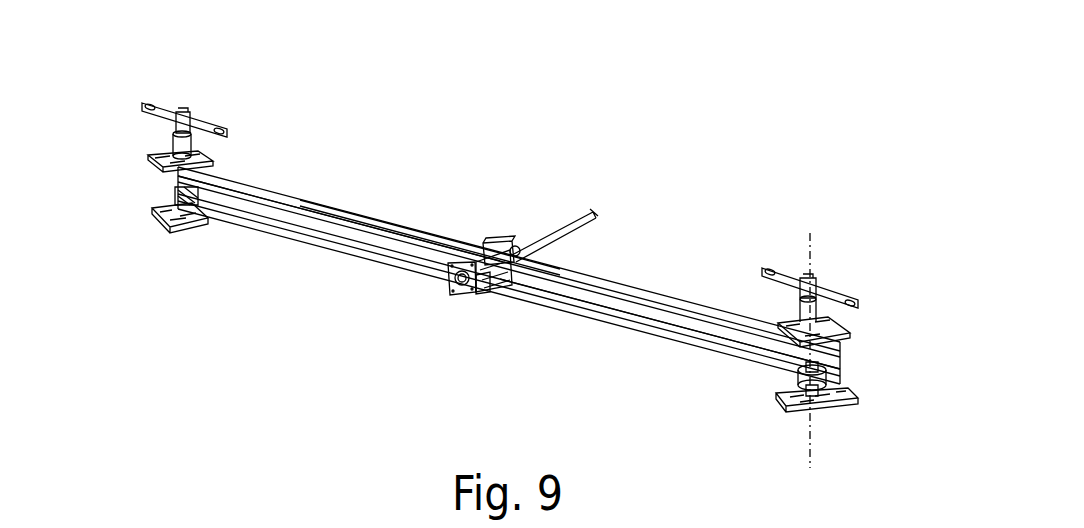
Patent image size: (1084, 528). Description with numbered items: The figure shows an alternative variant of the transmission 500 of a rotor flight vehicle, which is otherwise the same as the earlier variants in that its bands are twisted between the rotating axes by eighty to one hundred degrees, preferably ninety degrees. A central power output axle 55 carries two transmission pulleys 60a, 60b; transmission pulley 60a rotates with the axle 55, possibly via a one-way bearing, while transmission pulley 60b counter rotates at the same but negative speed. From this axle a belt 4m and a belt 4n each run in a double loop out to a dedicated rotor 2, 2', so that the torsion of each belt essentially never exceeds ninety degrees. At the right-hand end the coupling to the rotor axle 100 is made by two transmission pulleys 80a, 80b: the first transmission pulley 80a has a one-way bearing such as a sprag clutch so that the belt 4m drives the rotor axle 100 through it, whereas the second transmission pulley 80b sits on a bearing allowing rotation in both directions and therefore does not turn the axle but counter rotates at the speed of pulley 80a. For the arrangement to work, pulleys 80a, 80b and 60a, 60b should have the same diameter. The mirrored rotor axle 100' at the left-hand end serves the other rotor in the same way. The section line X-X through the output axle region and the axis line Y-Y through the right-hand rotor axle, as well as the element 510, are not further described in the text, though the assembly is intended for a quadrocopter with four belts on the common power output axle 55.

The rotor 2 is at (862, 292).
The rotor 2' is at (229, 99).
The belt 4m is at (613, 322).
The belt 4n is at (287, 227).
The power output axle 55 is at (478, 215).
The transmission pulley 60a is at (498, 250).
The transmission pulley 60b is at (483, 293).
The first transmission pulley 80a is at (808, 363).
The second transmission pulley 80b is at (805, 400).
The rotor axle 100 is at (852, 382).
The rotor axle 100' is at (124, 216).
The transmission 500 is at (663, 278).
The rail profile 510 is at (330, 117).
The axis X-X is at (578, 217).
The axis Y-Y is at (810, 257).